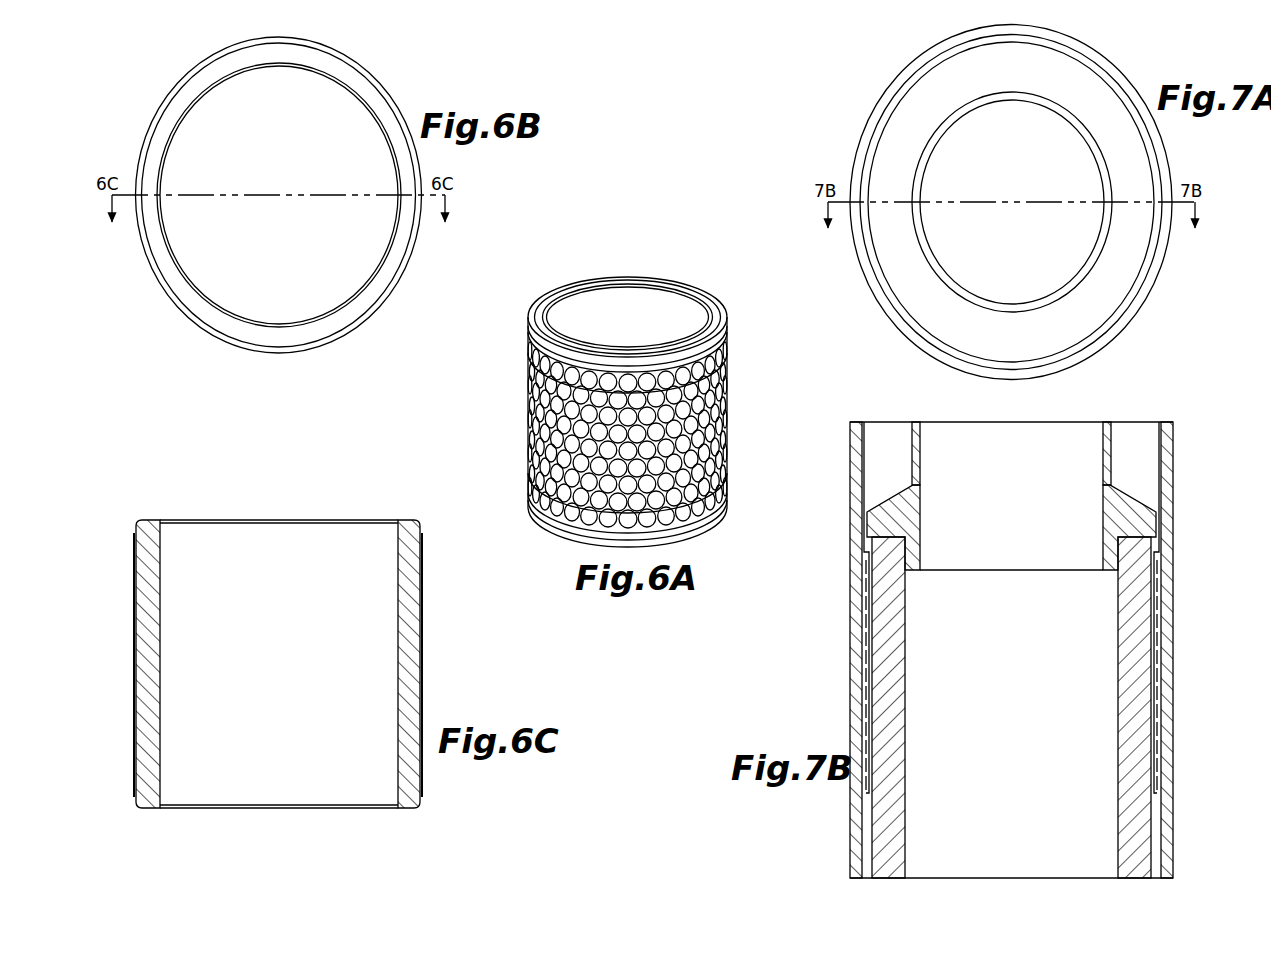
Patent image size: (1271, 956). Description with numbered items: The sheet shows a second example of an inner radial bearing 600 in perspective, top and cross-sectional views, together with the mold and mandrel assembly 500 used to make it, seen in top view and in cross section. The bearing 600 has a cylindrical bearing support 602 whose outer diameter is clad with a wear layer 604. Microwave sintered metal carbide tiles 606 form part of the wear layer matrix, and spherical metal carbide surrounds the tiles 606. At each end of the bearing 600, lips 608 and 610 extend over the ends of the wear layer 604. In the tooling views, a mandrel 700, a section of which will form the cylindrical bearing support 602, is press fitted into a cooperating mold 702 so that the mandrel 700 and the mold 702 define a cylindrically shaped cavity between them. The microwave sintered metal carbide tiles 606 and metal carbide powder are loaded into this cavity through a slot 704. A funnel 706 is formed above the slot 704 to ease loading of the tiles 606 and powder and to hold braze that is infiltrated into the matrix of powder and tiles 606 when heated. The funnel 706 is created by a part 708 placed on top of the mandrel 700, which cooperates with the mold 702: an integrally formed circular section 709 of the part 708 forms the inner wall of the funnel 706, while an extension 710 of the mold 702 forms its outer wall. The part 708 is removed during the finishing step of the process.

In FIG. 7A, the filter assembly 500 is at (1028, 202).
In FIG. 7B, the filter assembly 500 is at (1011, 623).
In FIG. 6B, the inner radial bearing 600 is at (245, 195).
In FIG. 6A, the inner radial bearing 600 is at (630, 377).
In FIG. 6B, the cylindrical bearing support 602 is at (272, 325).
In FIG. 6A, the cylindrical bearing support 602 is at (686, 308).
In FIG. 6C, the cylindrical bearing support 602 is at (160, 653).
In FIG. 6C, the wear layer 604 is at (424, 677).
In FIG. 6A, the microwave sintered metal carbide tiles 606 is at (528, 413).
In FIG. 6C, the microwave sintered metal carbide tiles 606 is at (136, 657).
In FIG. 7B, the microwave sintered metal carbide tiles 606 is at (866, 660).
In FIG. 6C, the lip 608 is at (138, 521).
In FIG. 6C, the lip 610 is at (138, 807).
In FIG. 7B, the mandrel 700 is at (1118, 670).
In FIG. 7A, the mold 702 is at (1153, 289).
In FIG. 7B, the mold 702 is at (850, 835).
In FIG. 7A, the slot 704 is at (1121, 312).
In FIG. 7B, the slot 704 is at (869, 505).
In FIG. 7A, the funnel 706 is at (896, 251).
In FIG. 7B, the funnel 706 is at (890, 434).
In FIG. 7A, the part 708 is at (1007, 303).
In FIG. 7B, the part 708 is at (918, 518).
In FIG. 7B, the circular section 709 is at (925, 423).
In FIG. 7B, the extension 710 is at (845, 427).